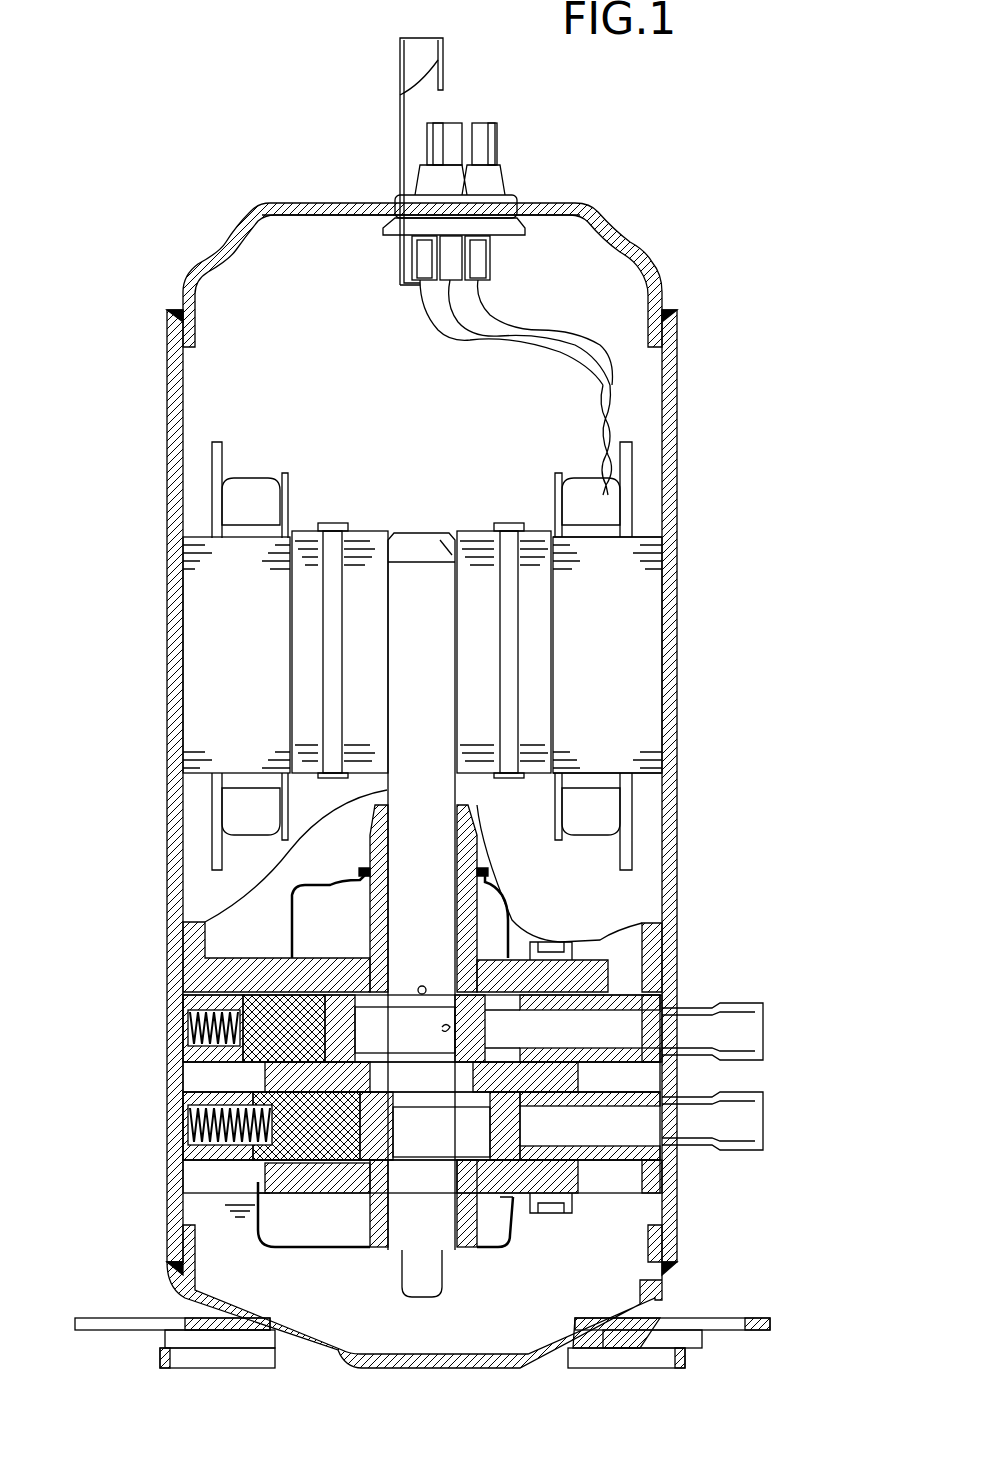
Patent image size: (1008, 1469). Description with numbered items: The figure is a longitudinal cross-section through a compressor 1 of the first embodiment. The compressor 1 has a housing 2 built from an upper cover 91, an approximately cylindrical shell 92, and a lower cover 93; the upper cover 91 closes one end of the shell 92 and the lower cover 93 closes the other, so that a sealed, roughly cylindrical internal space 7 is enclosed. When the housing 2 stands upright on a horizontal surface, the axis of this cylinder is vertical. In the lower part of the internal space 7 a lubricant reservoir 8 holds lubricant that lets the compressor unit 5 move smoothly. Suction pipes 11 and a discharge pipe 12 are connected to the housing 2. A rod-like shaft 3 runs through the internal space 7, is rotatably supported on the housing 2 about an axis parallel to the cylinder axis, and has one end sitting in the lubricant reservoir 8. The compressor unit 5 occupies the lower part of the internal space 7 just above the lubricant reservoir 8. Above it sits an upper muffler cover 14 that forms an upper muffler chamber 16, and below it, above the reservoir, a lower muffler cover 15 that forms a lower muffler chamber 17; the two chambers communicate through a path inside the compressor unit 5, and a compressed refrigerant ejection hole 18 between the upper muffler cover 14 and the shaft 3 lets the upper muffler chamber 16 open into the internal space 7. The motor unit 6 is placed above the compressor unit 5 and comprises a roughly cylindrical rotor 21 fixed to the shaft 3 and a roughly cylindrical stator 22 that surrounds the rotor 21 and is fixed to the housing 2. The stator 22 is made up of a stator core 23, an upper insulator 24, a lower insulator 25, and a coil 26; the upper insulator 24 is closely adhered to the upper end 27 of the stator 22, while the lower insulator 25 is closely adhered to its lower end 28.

The compressor 1 is at (722, 100).
The housing 2 is at (212, 225).
The shaft 3 is at (380, 790).
The compressor unit 5 is at (245, 1182).
The motor unit 6 is at (240, 440).
The internal space 7 is at (291, 235).
The lubricant reservoir 8 is at (222, 1283).
The suction pipes 11 is at (748, 1005).
The discharge pipe 12 is at (443, 56).
The upper muffler cover 14 is at (490, 878).
The lower muffler cover 15 is at (497, 1250).
The upper muffler chamber 16 is at (500, 905).
The lower muffler chamber 17 is at (497, 1220).
The compressed refrigerant ejection hole 18 is at (478, 878).
The rotor 21 is at (486, 530).
The stator 22 is at (560, 460).
The stator core 23 is at (218, 655).
The upper insulator 24 is at (215, 527).
The lower insulator 25 is at (220, 823).
The coil 26 is at (245, 492).
The upper end 27 is at (648, 540).
The lower end 28 is at (648, 774).
The upper cover 91 is at (622, 236).
The shell 92 is at (677, 406).
The lower cover 93 is at (665, 1312).